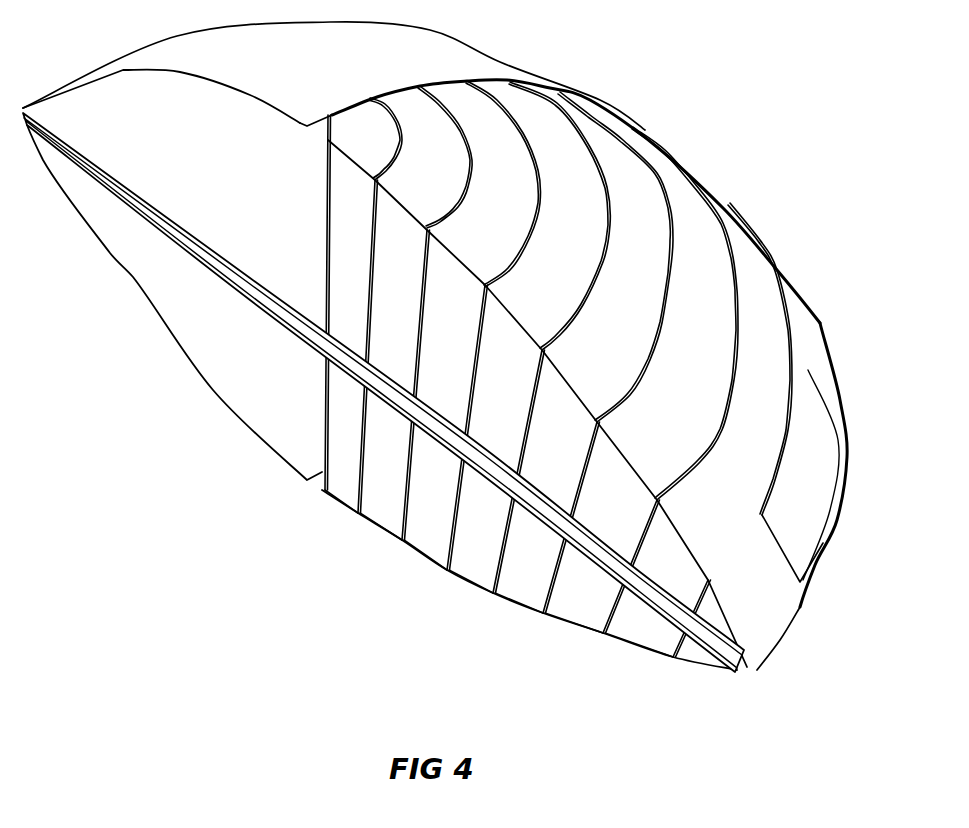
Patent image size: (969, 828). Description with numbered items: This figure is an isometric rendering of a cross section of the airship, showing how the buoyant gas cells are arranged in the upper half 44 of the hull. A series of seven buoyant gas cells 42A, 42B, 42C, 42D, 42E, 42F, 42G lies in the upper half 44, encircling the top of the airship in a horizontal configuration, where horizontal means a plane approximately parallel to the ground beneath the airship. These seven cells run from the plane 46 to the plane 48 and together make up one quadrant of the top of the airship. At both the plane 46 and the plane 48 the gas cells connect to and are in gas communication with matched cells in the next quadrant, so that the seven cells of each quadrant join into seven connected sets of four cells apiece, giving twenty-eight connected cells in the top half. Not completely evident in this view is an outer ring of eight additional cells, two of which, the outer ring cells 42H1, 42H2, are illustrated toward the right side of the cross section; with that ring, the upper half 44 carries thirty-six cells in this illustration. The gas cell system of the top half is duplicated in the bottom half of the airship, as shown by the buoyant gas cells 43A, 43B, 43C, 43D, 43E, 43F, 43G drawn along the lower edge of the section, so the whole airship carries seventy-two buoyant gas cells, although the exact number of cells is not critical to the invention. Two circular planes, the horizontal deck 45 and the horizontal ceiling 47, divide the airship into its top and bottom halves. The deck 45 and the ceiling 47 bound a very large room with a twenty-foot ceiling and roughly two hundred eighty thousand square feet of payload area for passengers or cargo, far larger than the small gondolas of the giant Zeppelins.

The upper half of the airship 44 is at (617, 162).
The plane 46 is at (485, 78).
The horizontal ceiling 47 is at (132, 207).
The horizontal deck 45 is at (110, 253).
The plane 48 is at (500, 380).
The buoyant gas cell 42A is at (343, 200).
The buoyant gas cell 42B is at (398, 182).
The buoyant gas cell 42C is at (463, 230).
The buoyant gas cell 42D is at (533, 277).
The buoyant gas cell 42E is at (600, 340).
The buoyant gas cell 42F is at (658, 405).
The buoyant gas cell 42G is at (708, 480).
The outer ring cell 42H1 is at (808, 370).
The outer ring cell 42H2 is at (777, 268).
The buoyant gas cell 43A is at (342, 493).
The buoyant gas cell 43B is at (380, 520).
The buoyant gas cell 43C is at (423, 543).
The buoyant gas cell 43D is at (468, 567).
The buoyant gas cell 43E is at (520, 593).
The buoyant gas cell 43F is at (575, 615).
The buoyant gas cell 43G is at (640, 633).